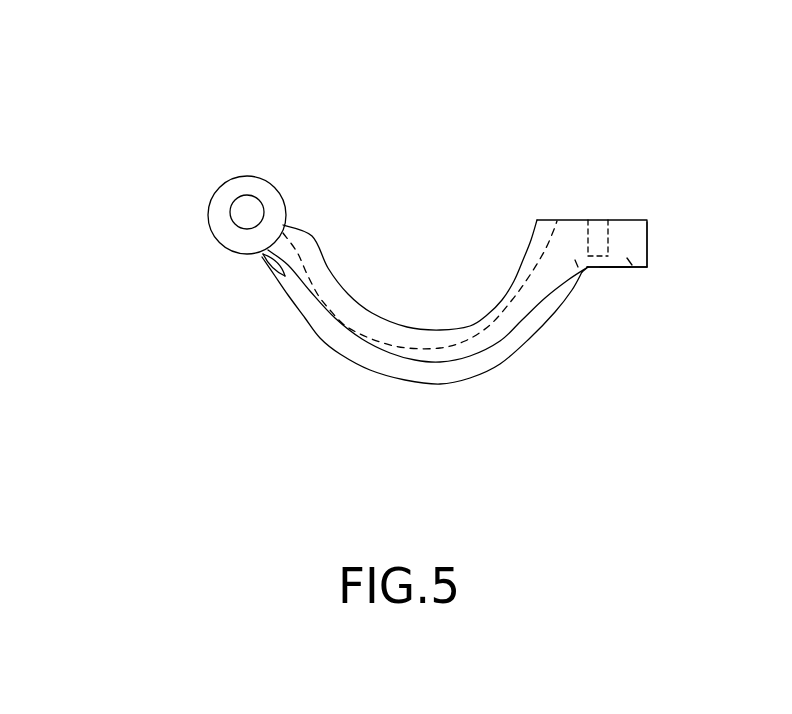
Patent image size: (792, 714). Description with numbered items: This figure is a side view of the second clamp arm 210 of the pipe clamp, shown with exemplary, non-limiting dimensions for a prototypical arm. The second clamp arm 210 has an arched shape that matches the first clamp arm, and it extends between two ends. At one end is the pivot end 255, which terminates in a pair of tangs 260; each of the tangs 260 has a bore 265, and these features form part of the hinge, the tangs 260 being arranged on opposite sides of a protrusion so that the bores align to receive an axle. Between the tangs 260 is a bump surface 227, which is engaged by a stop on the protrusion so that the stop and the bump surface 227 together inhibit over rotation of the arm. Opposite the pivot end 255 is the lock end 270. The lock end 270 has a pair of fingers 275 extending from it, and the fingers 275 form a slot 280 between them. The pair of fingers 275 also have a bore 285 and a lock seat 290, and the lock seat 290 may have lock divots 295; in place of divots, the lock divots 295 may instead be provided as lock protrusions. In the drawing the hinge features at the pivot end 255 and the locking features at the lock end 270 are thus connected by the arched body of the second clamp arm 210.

The second clamp arm 210 is at (493, 363).
The bump surface 227 is at (270, 257).
The pivot end 255 is at (233, 197).
The tangs 260 is at (267, 188).
The bore 265 is at (257, 210).
The lock end 270 is at (658, 265).
The fingers 275 is at (638, 250).
The slot 280 is at (669, 247).
The bore 285 is at (600, 227).
The lock seat 290 is at (587, 267).
The lock divots 295 is at (615, 265).